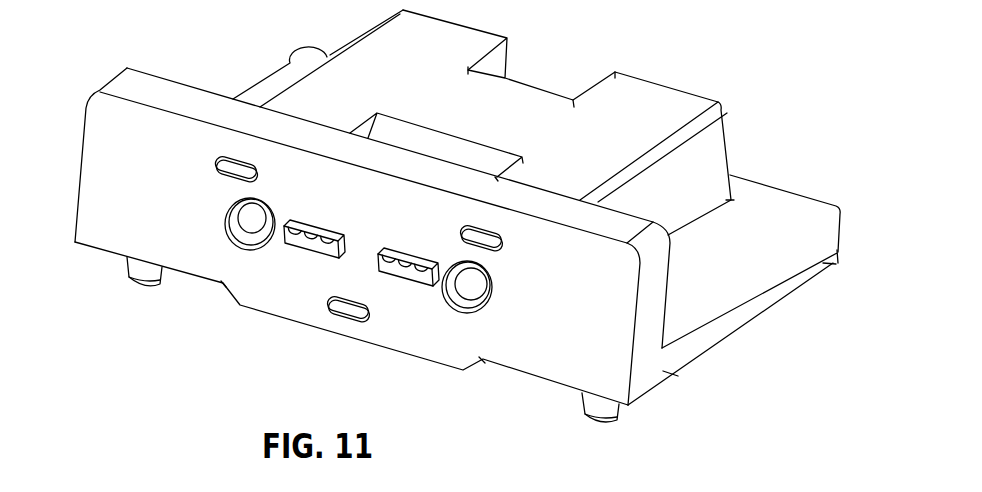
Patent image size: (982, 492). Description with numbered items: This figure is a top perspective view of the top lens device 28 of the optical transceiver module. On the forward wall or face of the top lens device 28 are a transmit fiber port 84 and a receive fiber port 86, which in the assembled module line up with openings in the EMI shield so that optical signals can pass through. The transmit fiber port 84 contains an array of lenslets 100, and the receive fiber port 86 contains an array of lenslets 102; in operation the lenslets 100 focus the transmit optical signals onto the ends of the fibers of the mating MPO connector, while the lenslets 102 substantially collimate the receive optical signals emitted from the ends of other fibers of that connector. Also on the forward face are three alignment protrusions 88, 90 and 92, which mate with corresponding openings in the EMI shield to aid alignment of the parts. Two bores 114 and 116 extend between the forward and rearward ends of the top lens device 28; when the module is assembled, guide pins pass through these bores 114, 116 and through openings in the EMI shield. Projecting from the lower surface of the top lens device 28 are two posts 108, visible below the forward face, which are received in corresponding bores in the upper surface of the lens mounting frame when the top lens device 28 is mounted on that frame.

The top lens device 28 is at (773, 53).
The transmit fiber port 84 is at (300, 250).
The receive fiber port 86 is at (393, 278).
The alignment protrusion 88 is at (216, 163).
The alignment protrusion 90 is at (338, 318).
The alignment protrusion 92 is at (501, 250).
The lenslets 100 is at (325, 245).
The lenslets 102 is at (418, 268).
The posts 108 is at (134, 283).
The bore 114 is at (465, 300).
The bore 116 is at (233, 232).